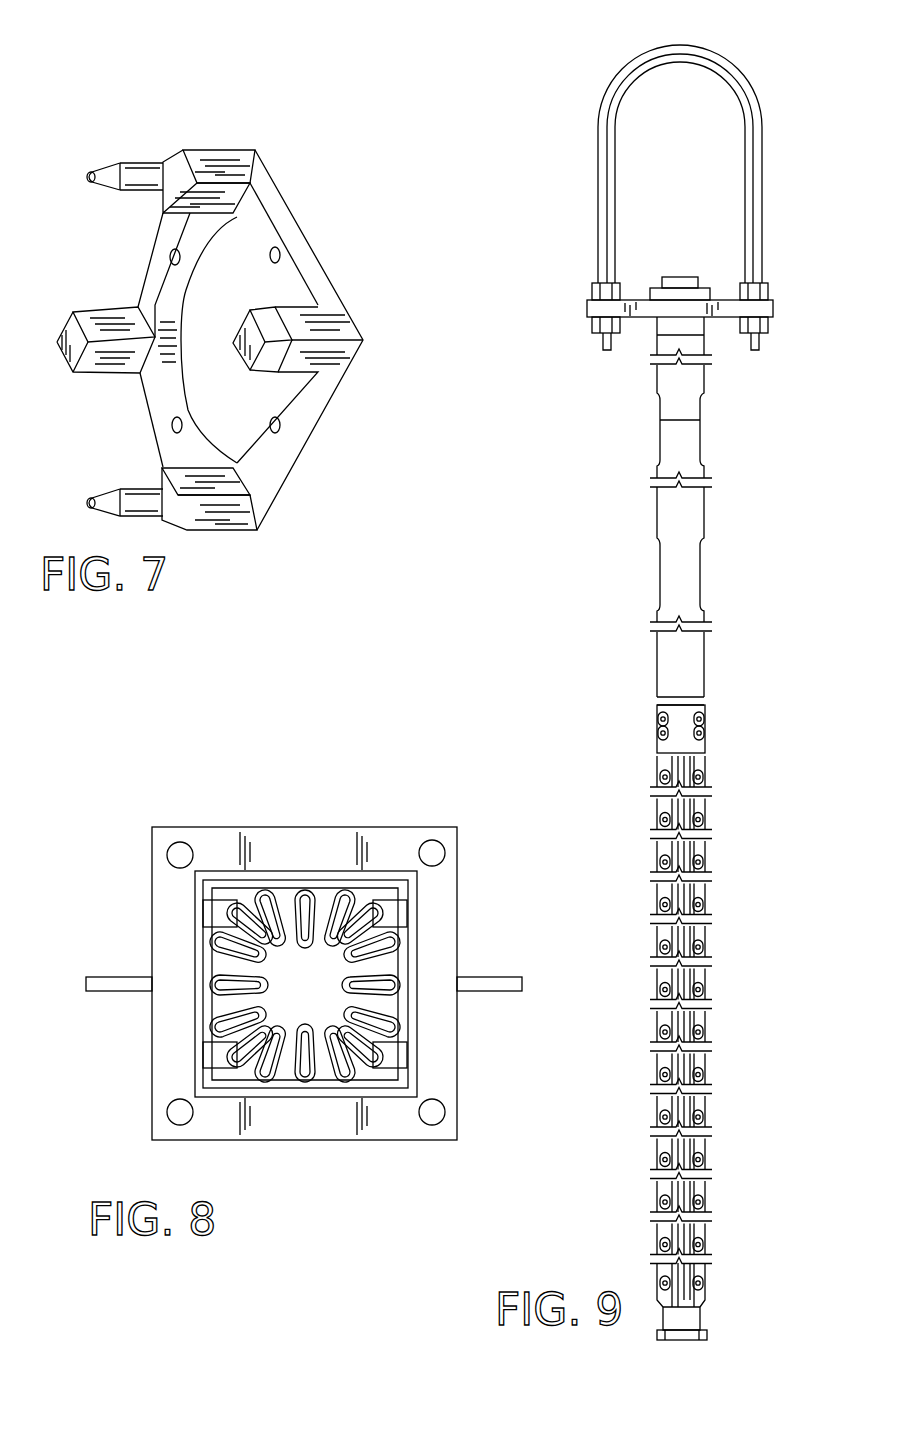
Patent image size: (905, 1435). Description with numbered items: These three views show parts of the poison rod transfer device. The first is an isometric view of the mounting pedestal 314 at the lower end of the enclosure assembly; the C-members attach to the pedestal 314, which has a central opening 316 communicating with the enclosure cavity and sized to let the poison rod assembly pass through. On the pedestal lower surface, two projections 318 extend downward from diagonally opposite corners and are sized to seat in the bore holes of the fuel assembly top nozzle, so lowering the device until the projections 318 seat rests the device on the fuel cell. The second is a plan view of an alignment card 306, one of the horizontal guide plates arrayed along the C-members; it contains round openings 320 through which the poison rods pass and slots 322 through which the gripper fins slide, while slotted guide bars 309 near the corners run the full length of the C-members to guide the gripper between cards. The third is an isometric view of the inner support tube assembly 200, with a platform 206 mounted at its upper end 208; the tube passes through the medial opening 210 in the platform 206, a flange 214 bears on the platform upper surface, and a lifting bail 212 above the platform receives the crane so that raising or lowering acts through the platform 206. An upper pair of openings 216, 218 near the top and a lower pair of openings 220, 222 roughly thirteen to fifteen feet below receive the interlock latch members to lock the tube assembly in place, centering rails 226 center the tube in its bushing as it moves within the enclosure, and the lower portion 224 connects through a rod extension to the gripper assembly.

In FIG. 7, the mounting pedestal 314 is at (220, 150).
In FIG. 7, the central opening 316 is at (252, 308).
In FIG. 7, the projection 318 is at (138, 165).
In FIG. 8, the alignment card 306 is at (222, 892).
In FIG. 8, the slotted guide bar 309 is at (412, 960).
In FIG. 8, the round opening 320 is at (342, 890).
In FIG. 8, the slot 322 is at (403, 920).
In FIG. 9, the inner support tube assembly 200 is at (676, 692).
In FIG. 9, the platform 206 is at (718, 328).
In FIG. 9, the upper end 208 is at (657, 332).
In FIG. 9, the medial opening 210 is at (720, 298).
In FIG. 9, the lifting bail 212 is at (598, 133).
In FIG. 9, the flange 214 is at (640, 298).
In FIG. 9, the upper opening 216 is at (660, 442).
In FIG. 9, the upper opening 218 is at (703, 430).
In FIG. 9, the lower opening 220 is at (660, 573).
In FIG. 9, the lower opening 222 is at (700, 573).
In FIG. 9, the lower portion 224 is at (707, 1335).
In FIG. 9, the centering rail 226 is at (656, 808).